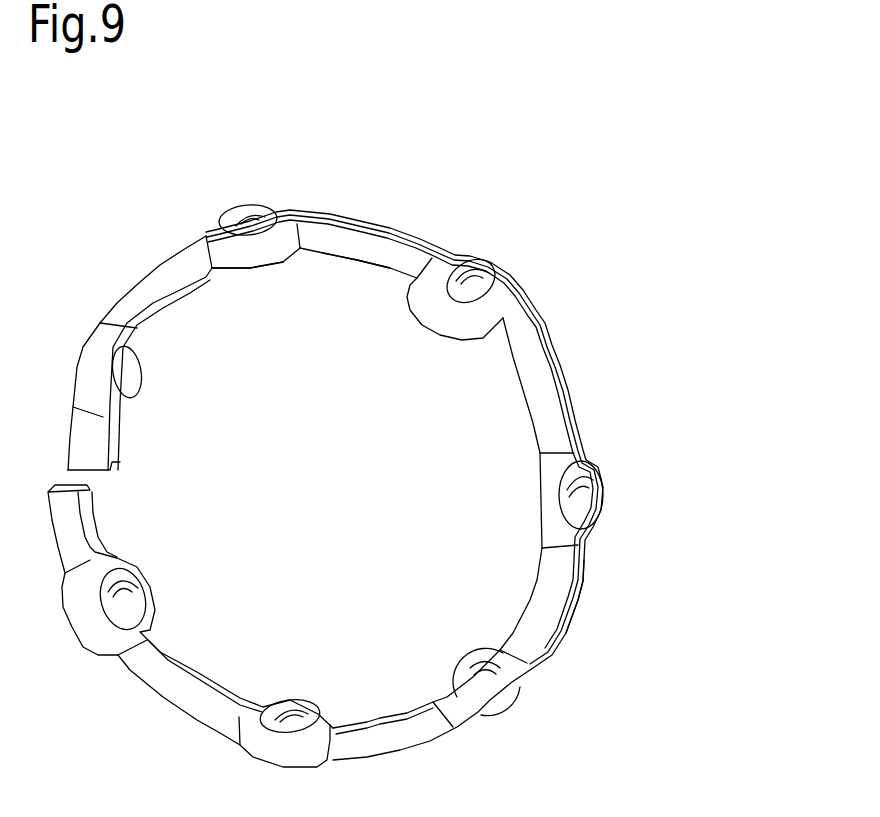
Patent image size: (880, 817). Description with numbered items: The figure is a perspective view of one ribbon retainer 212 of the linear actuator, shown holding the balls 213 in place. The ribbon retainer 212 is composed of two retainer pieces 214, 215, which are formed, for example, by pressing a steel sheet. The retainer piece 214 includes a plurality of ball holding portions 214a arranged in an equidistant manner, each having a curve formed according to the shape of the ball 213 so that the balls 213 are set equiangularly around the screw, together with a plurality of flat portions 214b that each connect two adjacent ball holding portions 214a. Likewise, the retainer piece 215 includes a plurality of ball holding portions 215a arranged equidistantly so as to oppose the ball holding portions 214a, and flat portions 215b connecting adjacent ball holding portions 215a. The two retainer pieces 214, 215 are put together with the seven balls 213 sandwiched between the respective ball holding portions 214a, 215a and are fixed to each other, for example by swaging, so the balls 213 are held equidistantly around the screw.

The ribbon retainer 212 is at (391, 430).
The balls 213 is at (366, 427).
The retainer piece 214 is at (397, 485).
The ball holding portions 214a is at (647, 501).
The flat portions 214b is at (641, 596).
The retainer piece 215 is at (374, 351).
The ball holding portions 215a is at (248, 301).
The flat portions 215b is at (356, 303).